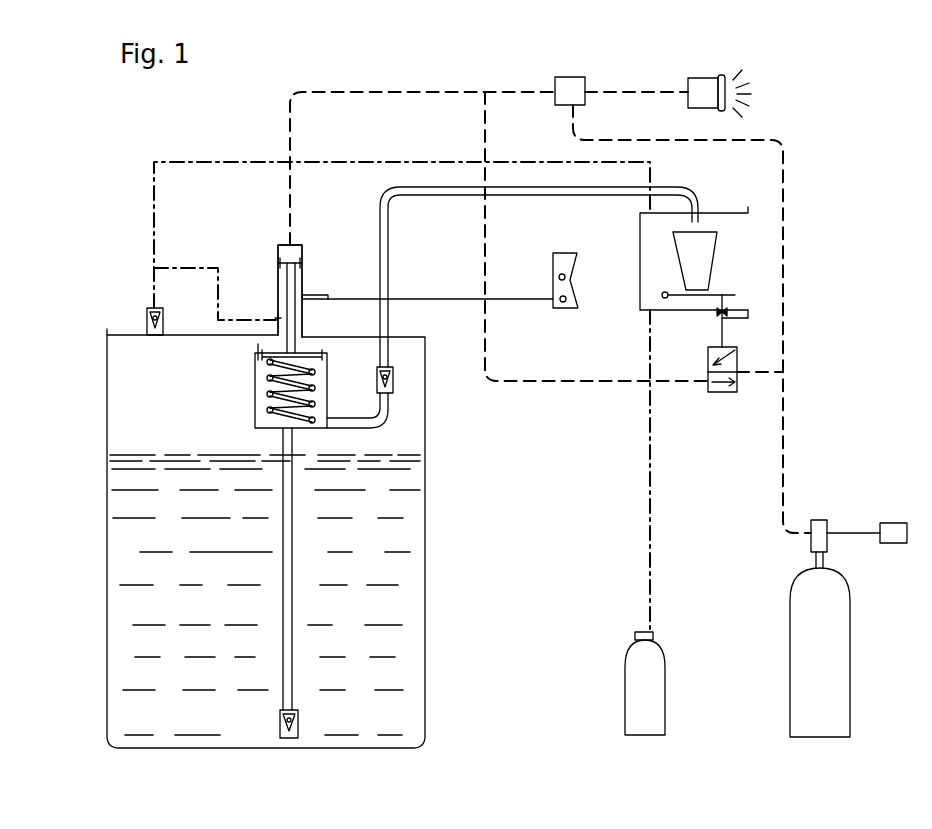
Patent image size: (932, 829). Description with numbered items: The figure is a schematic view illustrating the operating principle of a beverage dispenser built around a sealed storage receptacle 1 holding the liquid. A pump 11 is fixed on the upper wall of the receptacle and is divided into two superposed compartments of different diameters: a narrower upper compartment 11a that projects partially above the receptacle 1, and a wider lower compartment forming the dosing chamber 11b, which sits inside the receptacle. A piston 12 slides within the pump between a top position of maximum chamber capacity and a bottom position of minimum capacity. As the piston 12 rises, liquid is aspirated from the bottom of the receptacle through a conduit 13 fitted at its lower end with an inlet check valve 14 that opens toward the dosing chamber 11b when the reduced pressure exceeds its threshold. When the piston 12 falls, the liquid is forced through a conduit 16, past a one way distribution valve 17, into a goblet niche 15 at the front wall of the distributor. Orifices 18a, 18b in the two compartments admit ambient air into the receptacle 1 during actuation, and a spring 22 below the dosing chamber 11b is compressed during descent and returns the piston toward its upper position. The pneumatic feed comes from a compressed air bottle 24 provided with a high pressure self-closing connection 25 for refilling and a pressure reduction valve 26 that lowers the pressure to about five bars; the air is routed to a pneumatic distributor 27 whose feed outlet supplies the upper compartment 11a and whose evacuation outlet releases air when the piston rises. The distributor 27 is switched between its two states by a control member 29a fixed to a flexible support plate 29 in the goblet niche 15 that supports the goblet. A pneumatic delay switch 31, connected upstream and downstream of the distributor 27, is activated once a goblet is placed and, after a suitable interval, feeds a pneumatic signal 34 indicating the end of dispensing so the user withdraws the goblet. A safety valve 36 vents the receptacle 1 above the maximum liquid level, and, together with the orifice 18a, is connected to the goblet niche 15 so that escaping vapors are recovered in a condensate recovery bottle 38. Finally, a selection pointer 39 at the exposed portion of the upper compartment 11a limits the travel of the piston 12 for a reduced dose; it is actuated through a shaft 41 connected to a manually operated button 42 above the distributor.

The storage receptacle 1 is at (427, 515).
The pump 11 is at (302, 246).
The upper compartment 11a is at (296, 285).
The dosing chamber 11b is at (263, 386).
The piston 12 is at (289, 328).
The conduit 13 is at (292, 588).
The inlet check valve 14 is at (297, 724).
The goblet niche 15 is at (723, 263).
The conduit 16 is at (390, 224).
The one way distribution valve 17 is at (393, 385).
The orifice 18a is at (278, 318).
The orifice 18b is at (257, 348).
The spring 22 is at (300, 393).
The compressed air bottle 24 is at (845, 633).
The high pressure self-closing connection 25 is at (888, 523).
The pressure reduction valve 26 is at (820, 520).
The pneumatic distributor 27 is at (740, 364).
The flexible support plate 29 is at (683, 300).
The control member 29a is at (723, 328).
The pneumatic delay switch 31 is at (582, 78).
The pneumatic signal 34 is at (710, 82).
The safety valve 36 is at (143, 320).
The condensate recovery bottle 38 is at (652, 670).
The selection pointer 39 is at (320, 297).
The shaft 41 is at (463, 299).
The operating button 42 is at (567, 266).